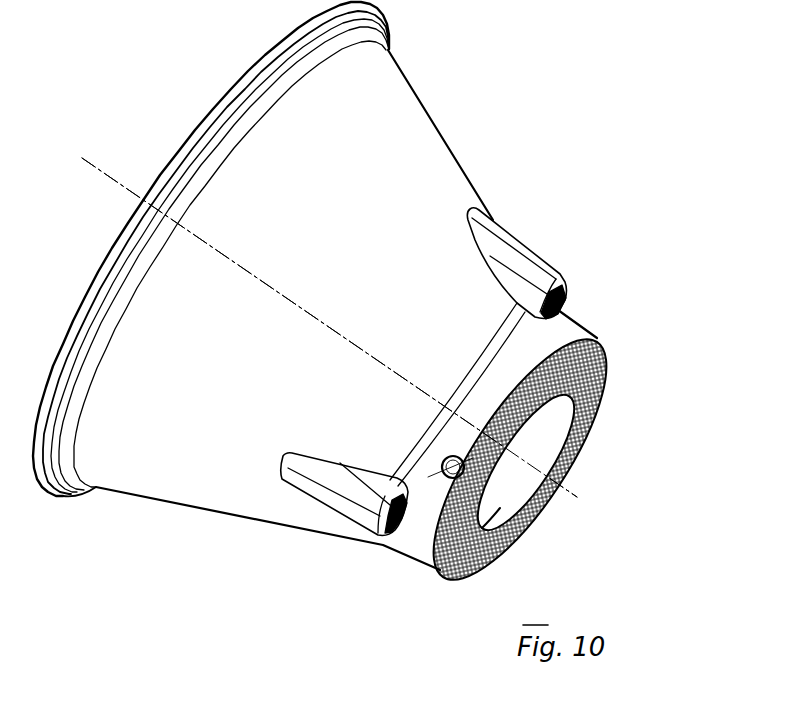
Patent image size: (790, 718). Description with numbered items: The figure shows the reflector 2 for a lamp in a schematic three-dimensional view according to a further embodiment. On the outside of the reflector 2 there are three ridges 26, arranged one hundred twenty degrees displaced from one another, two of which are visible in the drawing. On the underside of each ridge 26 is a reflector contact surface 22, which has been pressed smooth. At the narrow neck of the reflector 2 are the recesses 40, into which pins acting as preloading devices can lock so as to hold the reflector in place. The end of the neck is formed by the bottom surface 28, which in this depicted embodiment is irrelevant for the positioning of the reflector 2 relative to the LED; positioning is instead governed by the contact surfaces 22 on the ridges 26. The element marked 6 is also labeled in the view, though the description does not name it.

The reflector 2 is at (405, 142).
The ridges 26 is at (512, 262).
The reflector contact surfaces 22 is at (575, 292).
The bottom surface 28 is at (523, 452).
The inner bore 6 is at (537, 448).
The recesses 40 is at (523, 515).